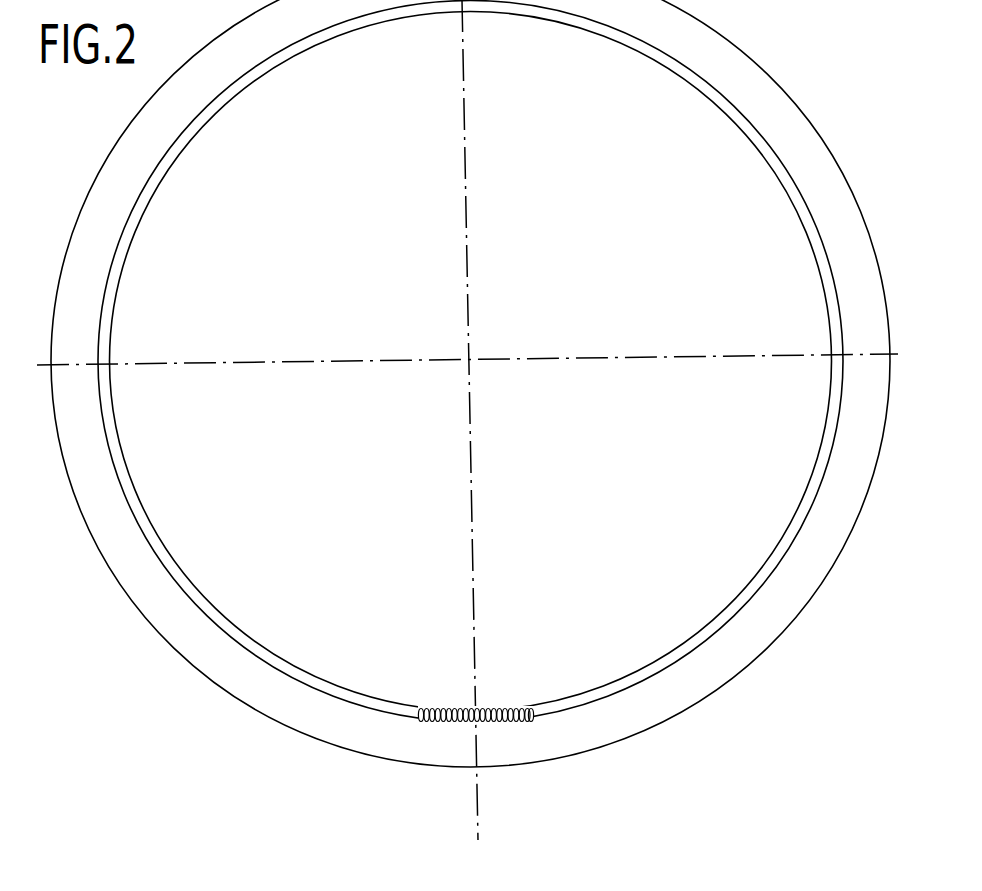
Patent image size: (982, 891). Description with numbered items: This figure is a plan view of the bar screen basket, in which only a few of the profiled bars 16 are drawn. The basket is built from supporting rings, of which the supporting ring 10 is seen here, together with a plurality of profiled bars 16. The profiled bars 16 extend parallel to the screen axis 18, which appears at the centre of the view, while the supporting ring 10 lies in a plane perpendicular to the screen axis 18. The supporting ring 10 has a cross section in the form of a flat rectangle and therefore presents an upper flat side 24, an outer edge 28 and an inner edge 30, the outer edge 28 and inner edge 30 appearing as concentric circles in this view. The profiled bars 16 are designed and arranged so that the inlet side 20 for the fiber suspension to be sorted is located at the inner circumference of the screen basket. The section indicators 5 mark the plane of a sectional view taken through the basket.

The supporting ring 10 is at (470, 401).
The profiled bars 16 is at (420, 708).
The screen axis 18 is at (470, 360).
The inlet side 20 is at (148, 474).
The upper flat side 24 is at (272, 696).
The outer edge 28 is at (778, 638).
The inner edge 30 is at (657, 674).
The section line 5- 5 is at (486, 665).